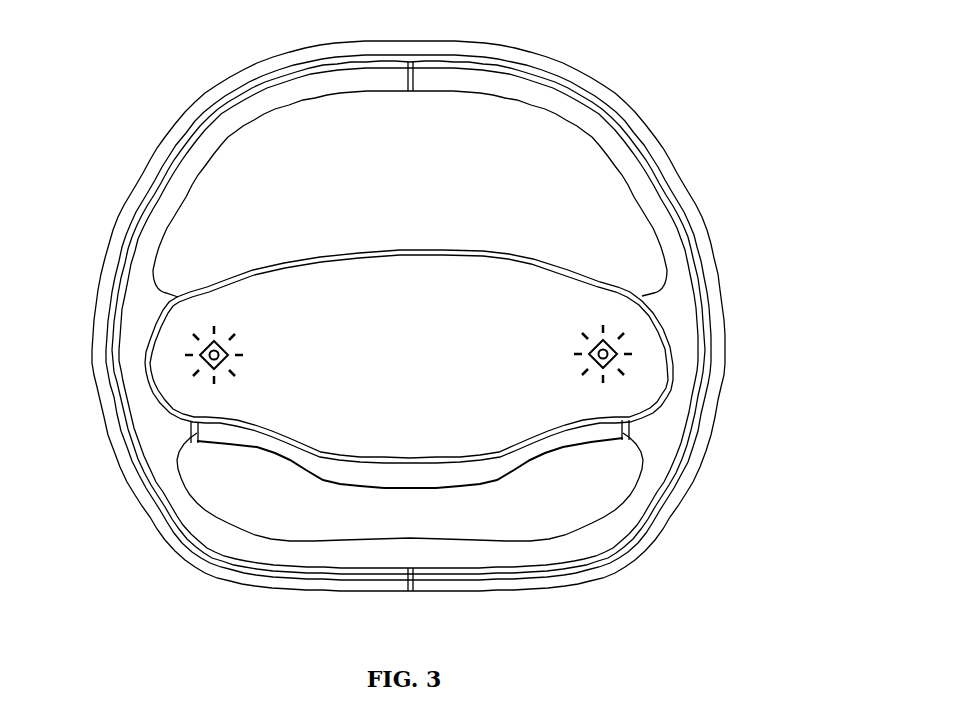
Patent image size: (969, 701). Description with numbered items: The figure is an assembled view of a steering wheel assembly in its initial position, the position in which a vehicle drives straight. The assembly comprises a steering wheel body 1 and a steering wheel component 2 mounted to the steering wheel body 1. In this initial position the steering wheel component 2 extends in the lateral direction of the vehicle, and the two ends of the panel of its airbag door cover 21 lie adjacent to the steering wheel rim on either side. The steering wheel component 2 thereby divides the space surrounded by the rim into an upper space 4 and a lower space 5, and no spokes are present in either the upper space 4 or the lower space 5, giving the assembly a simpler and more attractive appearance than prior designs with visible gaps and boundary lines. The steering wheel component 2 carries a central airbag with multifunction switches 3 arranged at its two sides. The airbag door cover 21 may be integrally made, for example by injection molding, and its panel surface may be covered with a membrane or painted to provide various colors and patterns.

The steering wheel body 1 is at (676, 228).
The steering wheel component 2 is at (470, 300).
The airbag door cover 21 is at (327, 307).
The multifunction switches 3 is at (160, 356).
The upper space 4 is at (486, 126).
The lower space 5 is at (576, 525).